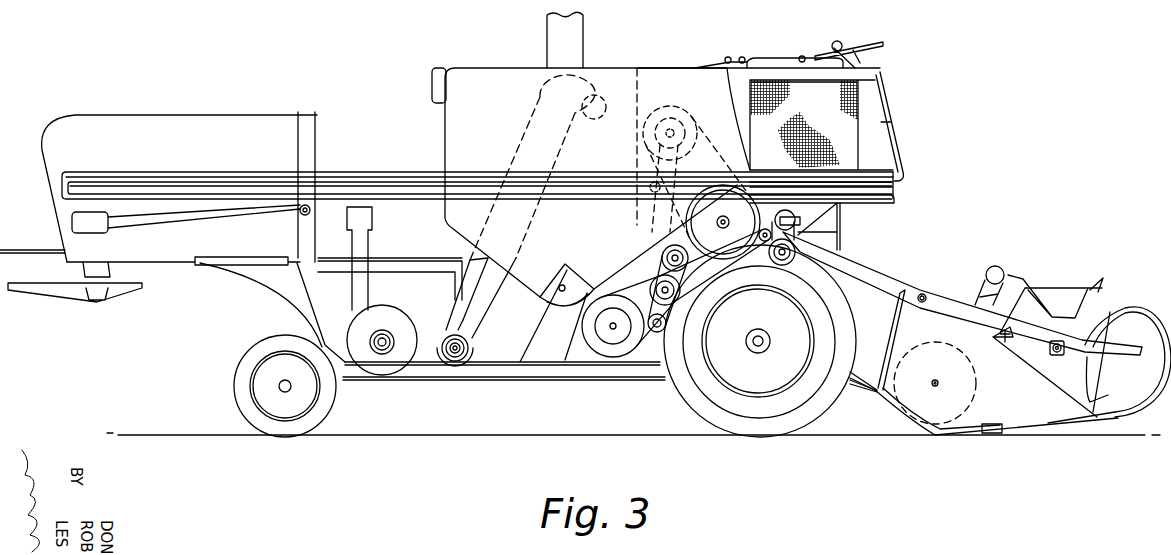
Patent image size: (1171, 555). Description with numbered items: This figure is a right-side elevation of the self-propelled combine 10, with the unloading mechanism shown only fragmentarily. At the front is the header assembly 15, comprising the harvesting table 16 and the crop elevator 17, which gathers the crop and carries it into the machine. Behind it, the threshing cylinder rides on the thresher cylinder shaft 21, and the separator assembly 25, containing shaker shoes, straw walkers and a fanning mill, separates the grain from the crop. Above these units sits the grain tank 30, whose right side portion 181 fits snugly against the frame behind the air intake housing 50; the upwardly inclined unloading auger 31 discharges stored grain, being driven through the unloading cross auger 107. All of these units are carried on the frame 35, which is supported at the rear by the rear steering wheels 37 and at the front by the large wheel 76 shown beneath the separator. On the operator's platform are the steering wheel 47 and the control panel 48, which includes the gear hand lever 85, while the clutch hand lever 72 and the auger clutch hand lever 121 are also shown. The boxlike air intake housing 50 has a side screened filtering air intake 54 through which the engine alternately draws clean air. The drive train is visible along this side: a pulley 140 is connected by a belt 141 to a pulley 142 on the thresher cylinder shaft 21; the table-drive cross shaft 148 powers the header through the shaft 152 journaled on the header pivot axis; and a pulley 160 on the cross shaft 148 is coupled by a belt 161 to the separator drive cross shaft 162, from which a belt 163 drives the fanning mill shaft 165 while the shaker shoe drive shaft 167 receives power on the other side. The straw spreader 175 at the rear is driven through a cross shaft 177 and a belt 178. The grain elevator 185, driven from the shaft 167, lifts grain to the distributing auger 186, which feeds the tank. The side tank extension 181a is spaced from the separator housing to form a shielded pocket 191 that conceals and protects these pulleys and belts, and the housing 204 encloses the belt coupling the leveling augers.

The combine 10 is at (901, 134).
The header assembly 15 is at (951, 296).
The harvesting table 16 is at (1028, 416).
The crop elevator 17 is at (877, 290).
The thresher cylinder shaft 21 is at (730, 222).
The separator assembly 25 is at (350, 116).
The grain tank 30 is at (477, 65).
The unloading auger 31 is at (575, 42).
The frame 35 is at (488, 382).
The rear steering wheels 37 is at (236, 392).
The steering wheel 47 is at (874, 41).
The control panel 48 is at (780, 59).
The air intake housing 50 is at (870, 108).
The side screened filtering air intake 54 is at (760, 100).
The hand lever 72 is at (744, 57).
The drive wheel 76 is at (705, 427).
The hand lever 85 is at (836, 44).
The unloading cross auger 107 is at (560, 285).
The hand lever 121 is at (726, 58).
The pulley 140 is at (696, 118).
The belt 141 is at (711, 138).
The pulley 142 is at (763, 242).
The table-drive cross shaft 148 is at (640, 166).
The shaft 152 is at (787, 256).
The pulley 160 is at (634, 200).
The belt 161 is at (653, 258).
The separator drive cross shaft 162 is at (683, 283).
The belt 163 is at (628, 278).
The fanning mill shaft 165 is at (610, 327).
The shaker shoe drive shaft 167 is at (455, 353).
The straw spreader 175 is at (68, 290).
The cross shaft 177 is at (297, 215).
The belt 178 is at (165, 226).
The side portion 181 is at (512, 84).
The extension 181a is at (668, 75).
The grain elevator 185 is at (467, 296).
The distributing auger 186 is at (594, 120).
The shielded pocket 191 is at (637, 88).
The housing 204 is at (432, 82).